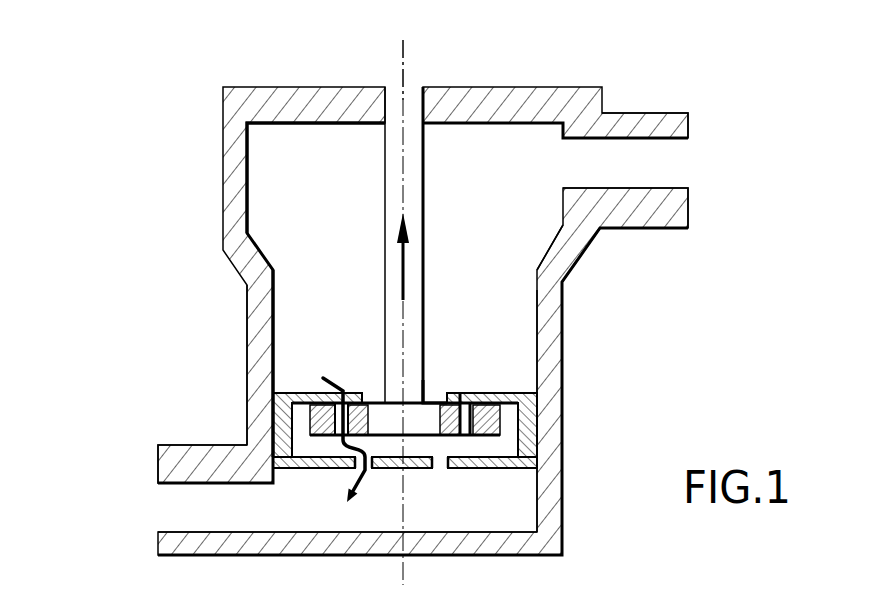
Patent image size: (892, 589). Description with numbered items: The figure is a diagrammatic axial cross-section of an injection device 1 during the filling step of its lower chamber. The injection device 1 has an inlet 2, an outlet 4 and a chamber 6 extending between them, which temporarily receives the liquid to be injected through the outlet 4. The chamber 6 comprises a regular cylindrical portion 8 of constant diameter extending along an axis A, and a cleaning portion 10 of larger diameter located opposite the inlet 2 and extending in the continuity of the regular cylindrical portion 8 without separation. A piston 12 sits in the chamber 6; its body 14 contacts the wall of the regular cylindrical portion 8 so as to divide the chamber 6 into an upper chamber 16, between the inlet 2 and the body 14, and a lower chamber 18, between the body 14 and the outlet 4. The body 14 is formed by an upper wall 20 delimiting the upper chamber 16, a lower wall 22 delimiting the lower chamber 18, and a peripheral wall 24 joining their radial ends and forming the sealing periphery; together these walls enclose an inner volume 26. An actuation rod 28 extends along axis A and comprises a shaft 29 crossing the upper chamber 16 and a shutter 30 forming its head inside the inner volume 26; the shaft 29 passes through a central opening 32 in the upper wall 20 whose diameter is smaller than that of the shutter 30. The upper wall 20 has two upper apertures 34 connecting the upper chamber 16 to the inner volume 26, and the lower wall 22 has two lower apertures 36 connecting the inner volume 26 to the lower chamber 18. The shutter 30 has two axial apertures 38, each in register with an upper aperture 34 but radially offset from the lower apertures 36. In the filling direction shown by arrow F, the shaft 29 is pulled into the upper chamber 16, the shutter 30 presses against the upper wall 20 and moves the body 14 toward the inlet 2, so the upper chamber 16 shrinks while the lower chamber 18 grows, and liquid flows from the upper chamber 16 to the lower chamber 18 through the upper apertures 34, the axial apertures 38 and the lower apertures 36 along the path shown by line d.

The injection device 1 is at (160, 277).
The inlet 2 is at (673, 163).
The outlet 4 is at (160, 503).
The chamber 6 is at (517, 333).
The regular cylindrical portion 8 is at (285, 303).
The cleaning portion 10 is at (278, 183).
The piston 12 is at (370, 290).
The body 14 is at (290, 425).
The upper chamber 16 is at (517, 297).
The lower chamber 18 is at (523, 505).
The upper wall 20 is at (510, 393).
The lower wall 22 is at (490, 467).
The peripheral wall 24 is at (273, 440).
The inner volume 26 is at (313, 448).
The actuation rod 28 is at (396, 158).
The shaft 29 is at (420, 188).
The shutter 30 is at (508, 412).
The central opening 32 is at (435, 395).
The upper aperture 34 is at (341, 393).
The lower aperture 36 is at (372, 468).
The axial aperture 38 is at (310, 420).
The axis A is at (413, 48).
The arrow F is at (400, 257).
The line d is at (344, 445).